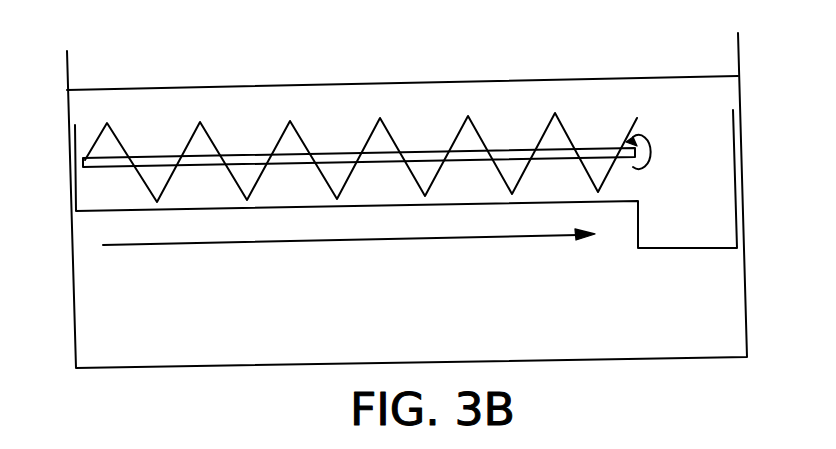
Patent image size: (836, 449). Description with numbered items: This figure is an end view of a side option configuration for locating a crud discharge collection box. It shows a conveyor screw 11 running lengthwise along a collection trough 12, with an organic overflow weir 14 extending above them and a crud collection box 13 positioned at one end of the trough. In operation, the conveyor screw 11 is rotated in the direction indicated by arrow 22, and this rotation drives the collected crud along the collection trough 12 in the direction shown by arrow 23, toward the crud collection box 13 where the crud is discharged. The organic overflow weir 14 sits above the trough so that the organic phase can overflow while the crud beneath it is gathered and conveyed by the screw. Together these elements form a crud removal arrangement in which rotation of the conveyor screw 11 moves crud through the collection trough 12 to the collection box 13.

The conveyor screw 11 is at (118, 137).
The collection trough 12 is at (97, 212).
The crud collection box 13 is at (739, 221).
The organic overflow weir 14 is at (592, 77).
The arrow 22 is at (655, 157).
The arrow 23 is at (383, 241).